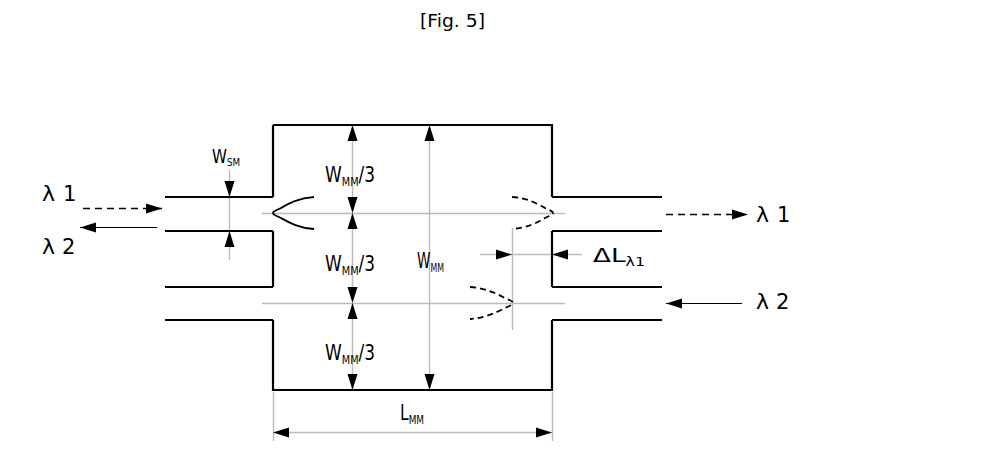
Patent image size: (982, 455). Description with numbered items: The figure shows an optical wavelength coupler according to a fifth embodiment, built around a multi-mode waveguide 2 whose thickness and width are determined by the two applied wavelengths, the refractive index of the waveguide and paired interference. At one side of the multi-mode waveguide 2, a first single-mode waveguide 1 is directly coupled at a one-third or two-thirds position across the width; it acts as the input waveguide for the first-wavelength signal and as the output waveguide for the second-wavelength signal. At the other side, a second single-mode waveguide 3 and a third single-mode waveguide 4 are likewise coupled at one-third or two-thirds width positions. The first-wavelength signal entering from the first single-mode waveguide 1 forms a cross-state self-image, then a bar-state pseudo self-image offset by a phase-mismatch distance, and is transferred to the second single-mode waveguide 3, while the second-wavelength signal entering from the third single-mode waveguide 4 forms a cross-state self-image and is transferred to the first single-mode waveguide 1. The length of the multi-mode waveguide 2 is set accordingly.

The first single-mode waveguide 1 is at (183, 210).
The multi-mode waveguide 2 is at (393, 130).
The second single-mode waveguide 3 is at (620, 210).
The third single-mode waveguide 4 is at (616, 308).